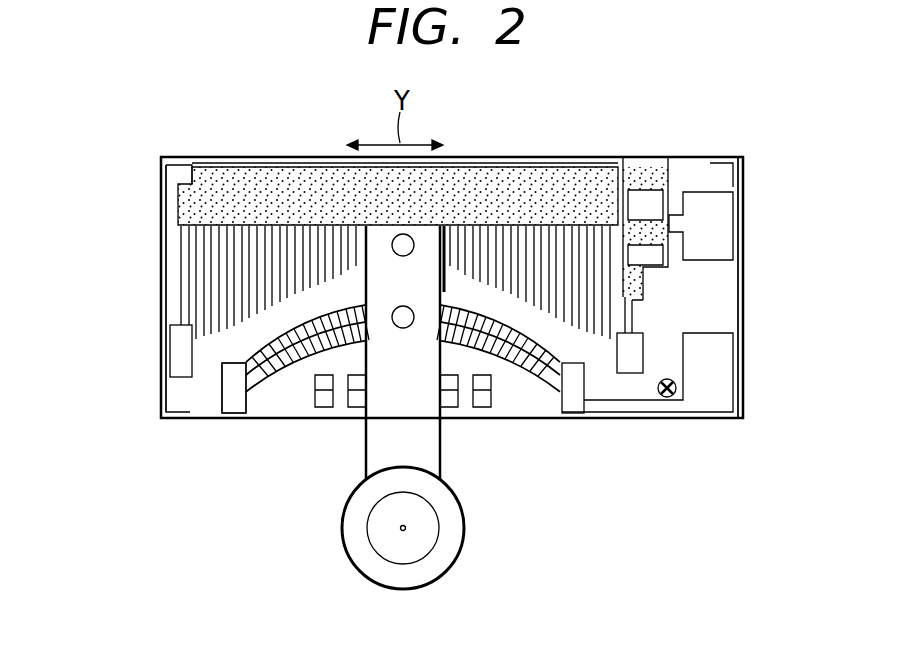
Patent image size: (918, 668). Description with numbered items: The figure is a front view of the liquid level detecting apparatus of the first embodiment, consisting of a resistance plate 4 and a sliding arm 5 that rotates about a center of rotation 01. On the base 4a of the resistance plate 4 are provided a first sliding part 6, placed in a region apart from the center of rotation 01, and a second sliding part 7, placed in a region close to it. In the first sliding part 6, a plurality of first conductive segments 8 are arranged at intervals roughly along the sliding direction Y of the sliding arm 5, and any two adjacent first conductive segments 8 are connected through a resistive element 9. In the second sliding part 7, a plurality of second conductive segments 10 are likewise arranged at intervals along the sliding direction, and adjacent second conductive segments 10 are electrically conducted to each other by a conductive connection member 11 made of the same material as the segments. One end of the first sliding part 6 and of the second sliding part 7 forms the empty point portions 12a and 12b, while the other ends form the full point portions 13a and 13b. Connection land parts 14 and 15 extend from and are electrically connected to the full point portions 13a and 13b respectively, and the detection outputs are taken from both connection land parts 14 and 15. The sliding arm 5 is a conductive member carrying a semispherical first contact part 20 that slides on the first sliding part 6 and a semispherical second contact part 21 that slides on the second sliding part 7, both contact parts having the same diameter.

The resistance plate 4 is at (152, 164).
The base 4a is at (723, 295).
The sliding arm 5 is at (425, 442).
The first sliding part 6 is at (166, 291).
The second sliding part 7 is at (214, 397).
The first conductive segments 8 is at (213, 262).
The resistive element 9 is at (303, 165).
The second conductive segments 10 is at (290, 345).
The conductive connection member 11 is at (526, 357).
The E-point portion 12a is at (178, 347).
The E-point portion 12b is at (228, 414).
The F-point portion 13a is at (633, 366).
The F-point portion 13b is at (578, 404).
The connection land part 14 is at (723, 222).
The connection land part 15 is at (723, 388).
The first contact part 20 is at (412, 237).
The second contact part 21 is at (412, 309).
The center of rotation 01 is at (405, 528).